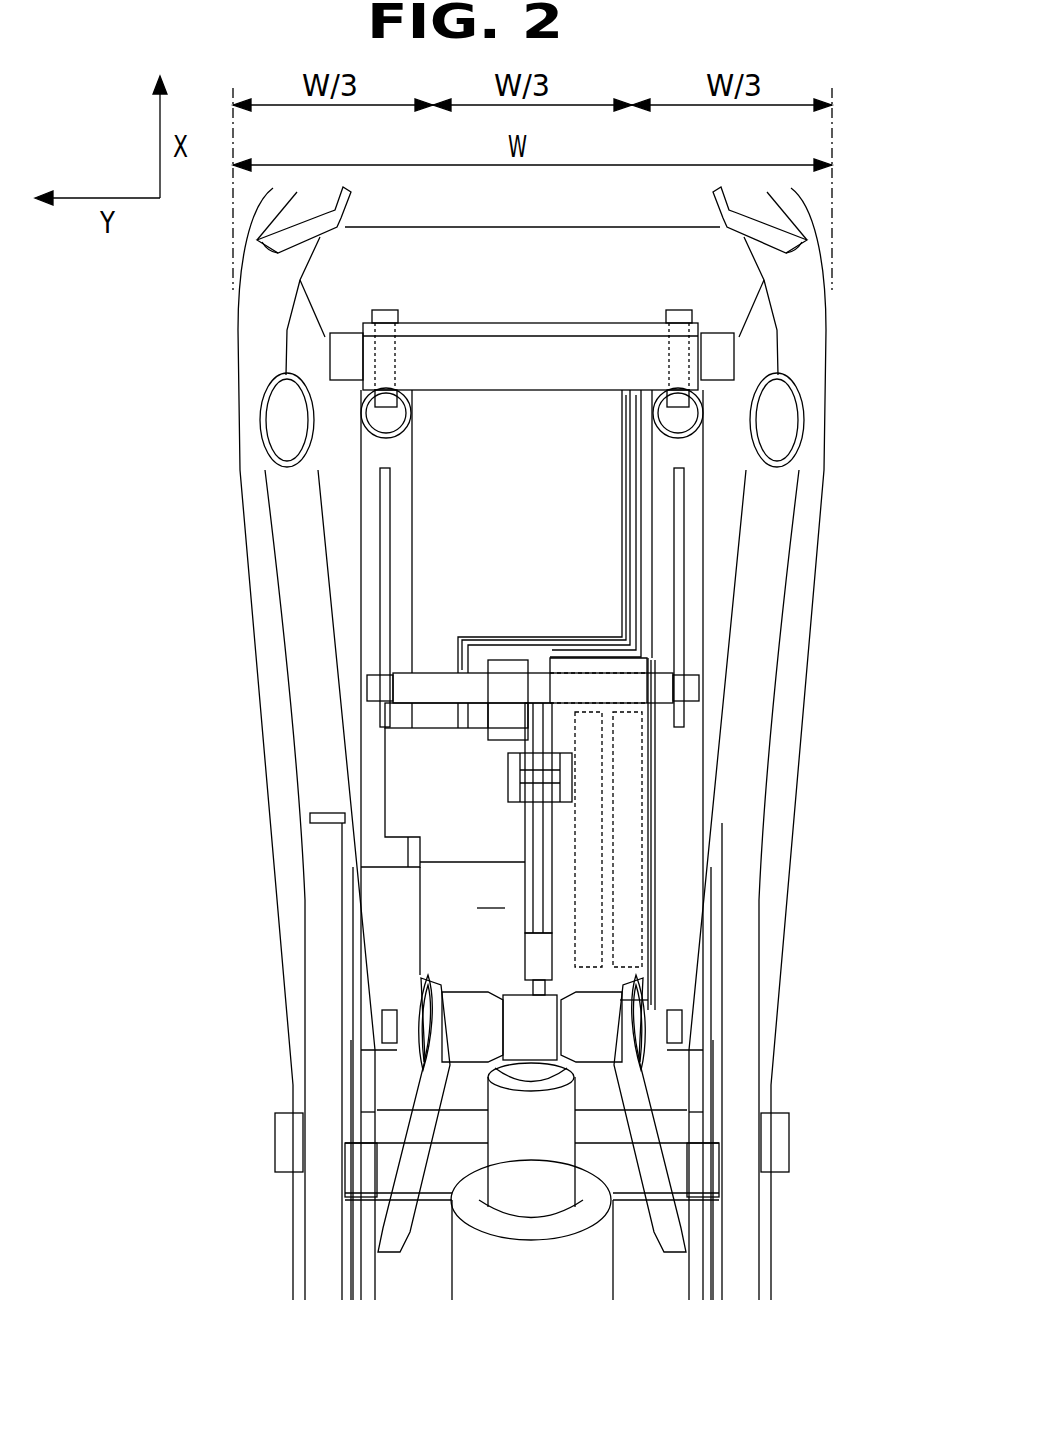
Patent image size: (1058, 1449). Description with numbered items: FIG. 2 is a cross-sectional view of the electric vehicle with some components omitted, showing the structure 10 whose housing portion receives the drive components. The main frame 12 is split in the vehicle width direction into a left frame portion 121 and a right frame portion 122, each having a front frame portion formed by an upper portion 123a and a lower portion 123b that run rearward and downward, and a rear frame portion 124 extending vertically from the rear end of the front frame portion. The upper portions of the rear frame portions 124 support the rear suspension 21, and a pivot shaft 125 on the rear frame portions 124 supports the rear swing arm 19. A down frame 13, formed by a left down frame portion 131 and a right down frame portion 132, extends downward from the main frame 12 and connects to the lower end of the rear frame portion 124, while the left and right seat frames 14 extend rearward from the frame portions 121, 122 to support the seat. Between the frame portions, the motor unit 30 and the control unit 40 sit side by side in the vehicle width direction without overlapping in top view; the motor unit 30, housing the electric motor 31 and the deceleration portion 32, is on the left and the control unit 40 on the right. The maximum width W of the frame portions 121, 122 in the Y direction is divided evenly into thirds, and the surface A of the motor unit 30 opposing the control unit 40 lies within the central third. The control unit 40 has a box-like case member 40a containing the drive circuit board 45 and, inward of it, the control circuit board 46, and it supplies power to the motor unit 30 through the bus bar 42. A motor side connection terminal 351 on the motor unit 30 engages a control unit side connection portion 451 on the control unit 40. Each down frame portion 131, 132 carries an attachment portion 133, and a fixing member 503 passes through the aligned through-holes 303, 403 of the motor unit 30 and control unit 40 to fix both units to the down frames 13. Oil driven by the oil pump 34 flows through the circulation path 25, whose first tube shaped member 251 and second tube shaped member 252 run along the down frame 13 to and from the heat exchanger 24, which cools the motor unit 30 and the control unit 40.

The robot 10 is at (862, 242).
The main frame 12 is at (830, 423).
The down frame 13 is at (418, 470).
The seat frames 14 is at (315, 970).
The rear swing arm 19 is at (292, 1235).
The rear suspension 21 is at (505, 1272).
The heat exchanger 24 is at (520, 322).
The circulation path 25 is at (612, 440).
The motor unit 30 is at (491, 893).
The electric motor 31 is at (440, 915).
The deceleration portion 32 is at (385, 945).
The oil pump 34 is at (383, 775).
The control unit 40 is at (660, 946).
The case member 40a is at (650, 900).
The bus bar 42 is at (545, 752).
The drive circuit board 45 is at (600, 770).
The control circuit board 46 is at (585, 835).
The left frame portion 121 is at (235, 570).
The right frame portion 122 is at (830, 605).
The upper portion 123a is at (312, 727).
The lower portion 123b is at (275, 673).
The rear frame portion 124 is at (375, 1108).
The pivot shaft 125 is at (275, 1140).
The left down frame portion 131 is at (363, 530).
The right down frame portion 132 is at (690, 505).
The attachment portion 133 is at (390, 530).
The first tube shaped member 251 is at (637, 587).
The second tube shaped member 252 is at (625, 510).
The through-hole 303 is at (505, 672).
The motor side connection terminal 351 is at (525, 952).
The through-hole 403 is at (585, 672).
The control unit side connection portion 451 is at (620, 1005).
The fixing member 503 is at (420, 690).
The surface A is at (520, 862).